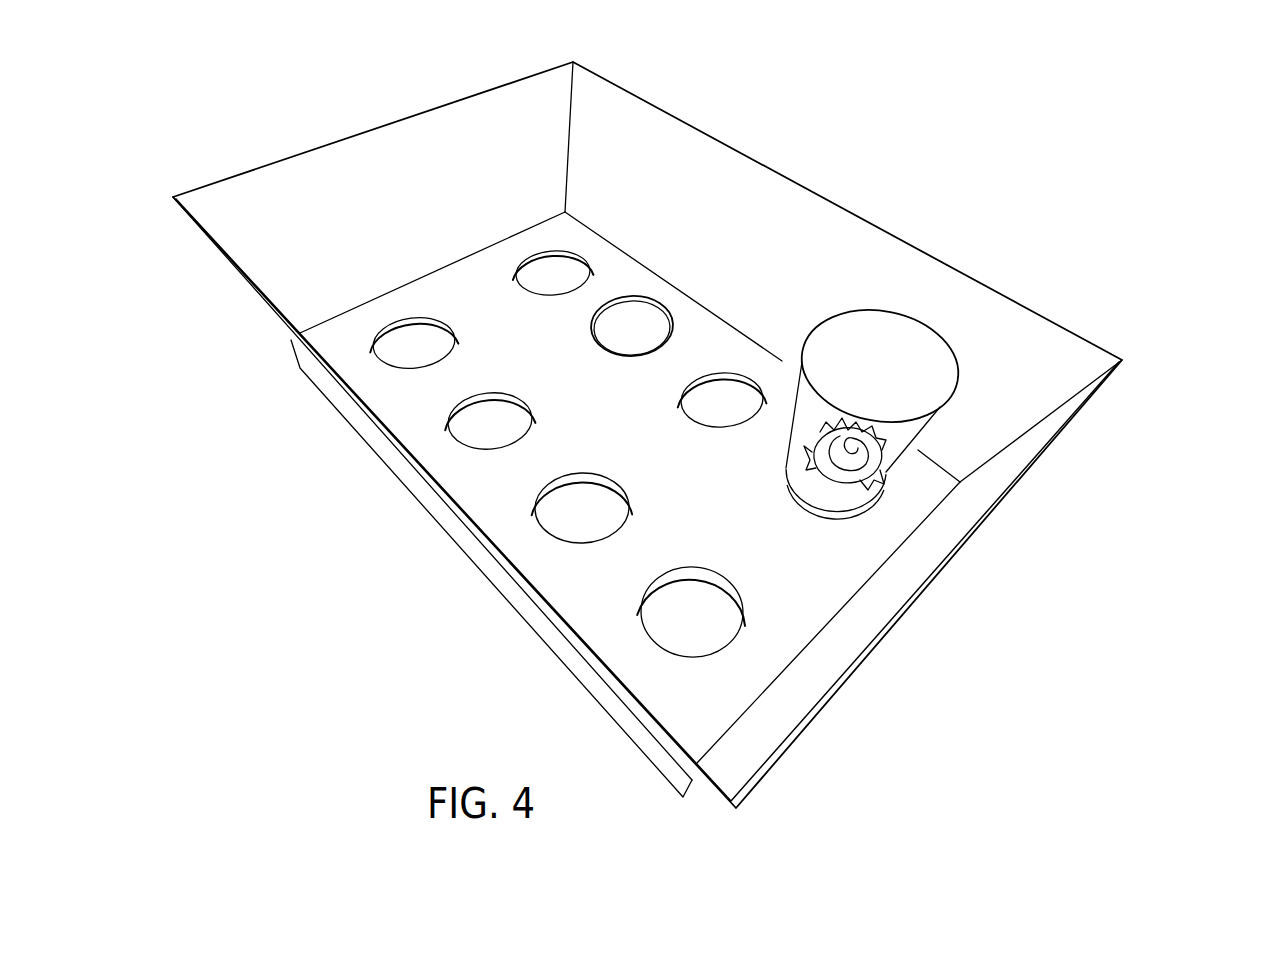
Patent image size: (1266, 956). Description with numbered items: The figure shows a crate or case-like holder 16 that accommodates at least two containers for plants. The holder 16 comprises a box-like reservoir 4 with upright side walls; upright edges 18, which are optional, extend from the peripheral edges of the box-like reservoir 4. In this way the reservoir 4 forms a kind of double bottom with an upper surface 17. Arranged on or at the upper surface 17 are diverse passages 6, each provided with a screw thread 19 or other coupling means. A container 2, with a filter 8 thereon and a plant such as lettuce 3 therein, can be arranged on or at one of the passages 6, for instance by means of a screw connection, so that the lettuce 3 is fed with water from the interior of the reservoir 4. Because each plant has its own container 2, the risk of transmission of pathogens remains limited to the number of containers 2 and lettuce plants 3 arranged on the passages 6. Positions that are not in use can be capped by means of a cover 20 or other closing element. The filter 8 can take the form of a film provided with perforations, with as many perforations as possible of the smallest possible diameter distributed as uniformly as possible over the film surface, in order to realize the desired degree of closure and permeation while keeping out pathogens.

The container 2 is at (935, 425).
The lettuce 3 is at (822, 418).
The reservoir 4 is at (431, 517).
The passages 6 is at (707, 400).
The filter 8 is at (923, 351).
The holder 16 is at (1078, 256).
The upper surface 17 is at (756, 567).
The upright edges 18 is at (373, 140).
The screw thread 19 is at (383, 330).
The cover 20 is at (640, 318).